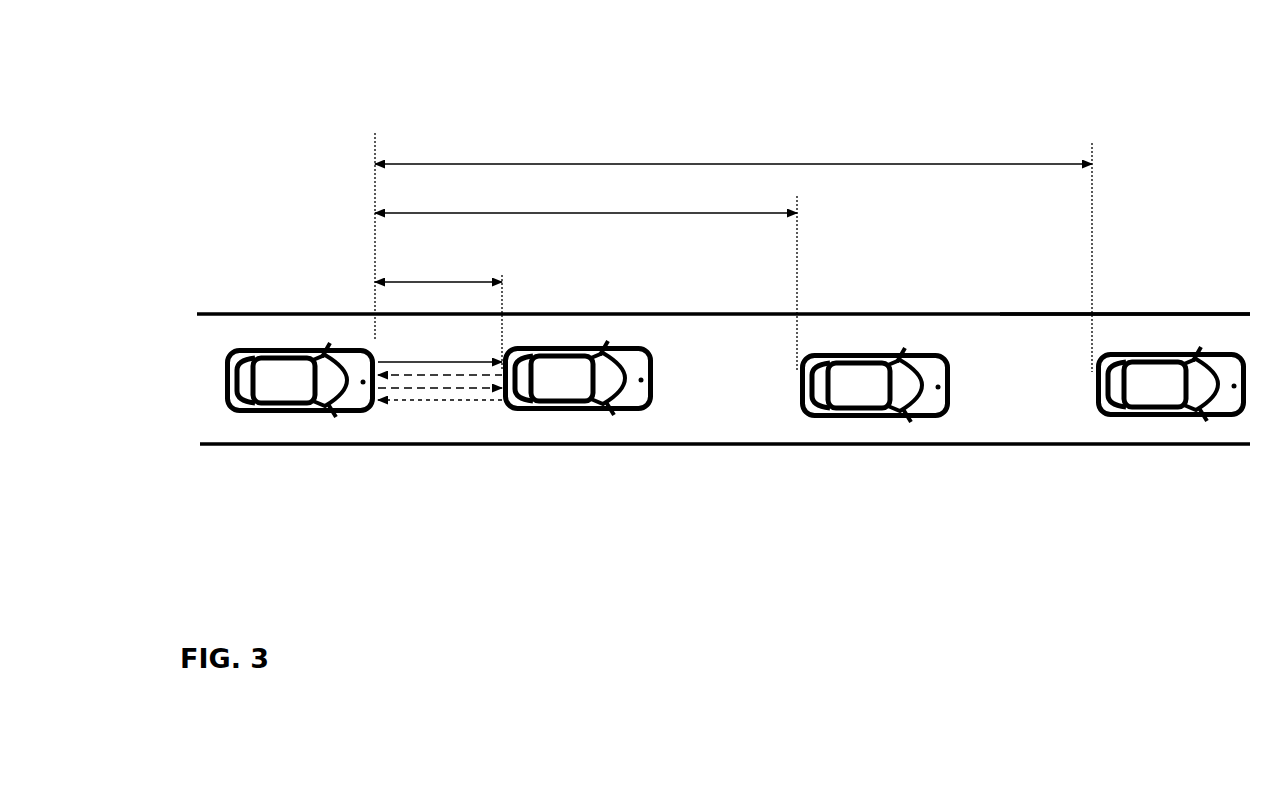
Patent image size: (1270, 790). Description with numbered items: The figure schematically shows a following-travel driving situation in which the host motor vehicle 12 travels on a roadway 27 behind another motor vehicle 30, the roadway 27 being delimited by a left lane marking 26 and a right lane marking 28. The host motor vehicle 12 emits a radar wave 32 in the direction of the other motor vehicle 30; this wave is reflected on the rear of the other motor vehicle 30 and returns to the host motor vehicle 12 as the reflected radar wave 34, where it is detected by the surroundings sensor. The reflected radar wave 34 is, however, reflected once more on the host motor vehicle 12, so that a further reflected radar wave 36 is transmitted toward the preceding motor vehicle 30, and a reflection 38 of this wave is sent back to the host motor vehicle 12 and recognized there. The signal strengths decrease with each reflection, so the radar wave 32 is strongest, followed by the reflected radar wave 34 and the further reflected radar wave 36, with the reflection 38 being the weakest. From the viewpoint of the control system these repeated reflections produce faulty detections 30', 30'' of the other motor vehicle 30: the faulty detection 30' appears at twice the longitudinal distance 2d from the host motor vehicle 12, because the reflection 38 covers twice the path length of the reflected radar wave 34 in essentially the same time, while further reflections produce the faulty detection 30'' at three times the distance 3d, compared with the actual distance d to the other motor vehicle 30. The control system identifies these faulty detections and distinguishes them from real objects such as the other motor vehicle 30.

The host motor vehicle 12 is at (295, 414).
The left lane marking 26 is at (197, 314).
The roadway 27 is at (1246, 312).
The right lane marking 28 is at (200, 444).
The other motor vehicle 30 is at (572, 468).
The faulty detection 30' is at (867, 474).
The faulty detection 30'' is at (1163, 472).
The radar wave 32 is at (440, 360).
The reflected radar wave 34 is at (478, 370).
The further reflected radar wave 36 is at (398, 392).
The reflection 38 is at (475, 402).
The distance d is at (408, 282).
The twice the longitudinal distance 2d is at (720, 213).
The three times the distance 3d is at (1030, 164).